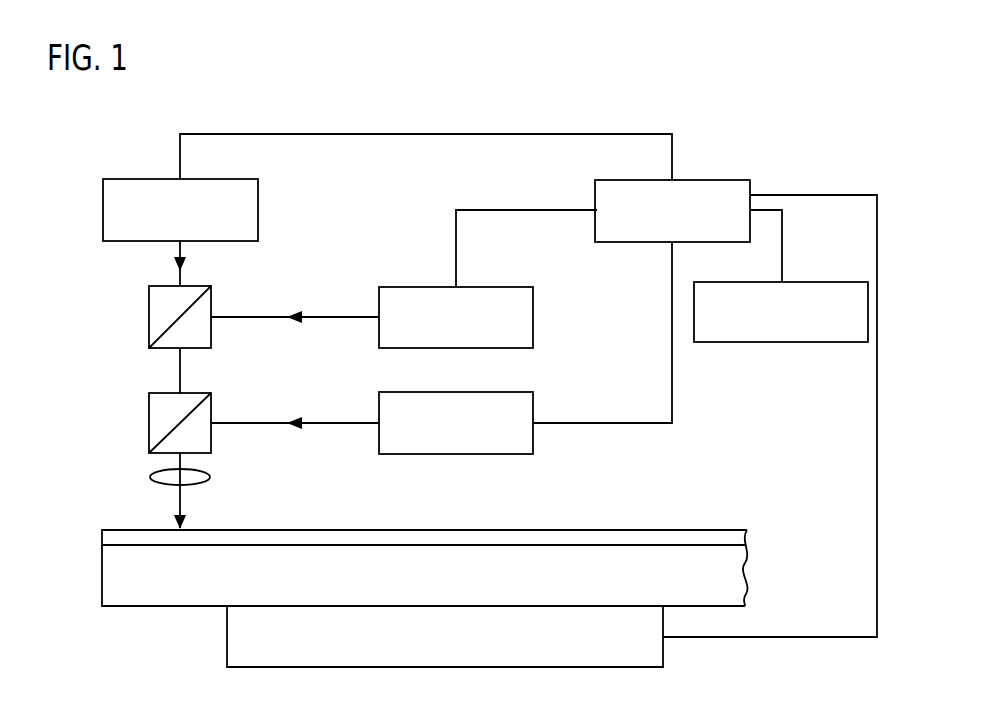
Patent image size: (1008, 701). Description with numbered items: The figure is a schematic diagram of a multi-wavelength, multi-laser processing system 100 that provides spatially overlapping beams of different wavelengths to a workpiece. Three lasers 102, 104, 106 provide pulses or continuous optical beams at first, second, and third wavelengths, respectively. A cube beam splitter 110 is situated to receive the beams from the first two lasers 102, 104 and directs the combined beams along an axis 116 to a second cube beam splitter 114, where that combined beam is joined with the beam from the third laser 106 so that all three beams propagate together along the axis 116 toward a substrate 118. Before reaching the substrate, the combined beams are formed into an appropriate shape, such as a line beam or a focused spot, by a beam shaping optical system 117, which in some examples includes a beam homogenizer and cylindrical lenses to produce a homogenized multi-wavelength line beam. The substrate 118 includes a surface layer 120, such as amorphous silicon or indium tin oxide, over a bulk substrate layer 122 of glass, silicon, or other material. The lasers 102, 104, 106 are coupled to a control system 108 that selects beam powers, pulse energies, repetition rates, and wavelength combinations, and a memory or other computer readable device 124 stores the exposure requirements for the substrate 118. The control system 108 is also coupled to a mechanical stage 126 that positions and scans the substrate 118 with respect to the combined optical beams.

The processing system 100 is at (672, 82).
The laser 102 is at (242, 179).
The laser 104 is at (508, 287).
The laser 106 is at (517, 392).
The control system 108 is at (728, 178).
The cube beam splitter 110 is at (202, 286).
The cube beam splitter 114 is at (202, 393).
The axis 116 is at (180, 505).
The beam shaping optical system 117 is at (210, 477).
The substrate 118 is at (770, 559).
The surface layer 120 is at (650, 543).
The bulk substrate layer 122 is at (723, 575).
The memory or other computer readable device 124 is at (800, 342).
The mechanical stage 126 is at (257, 634).